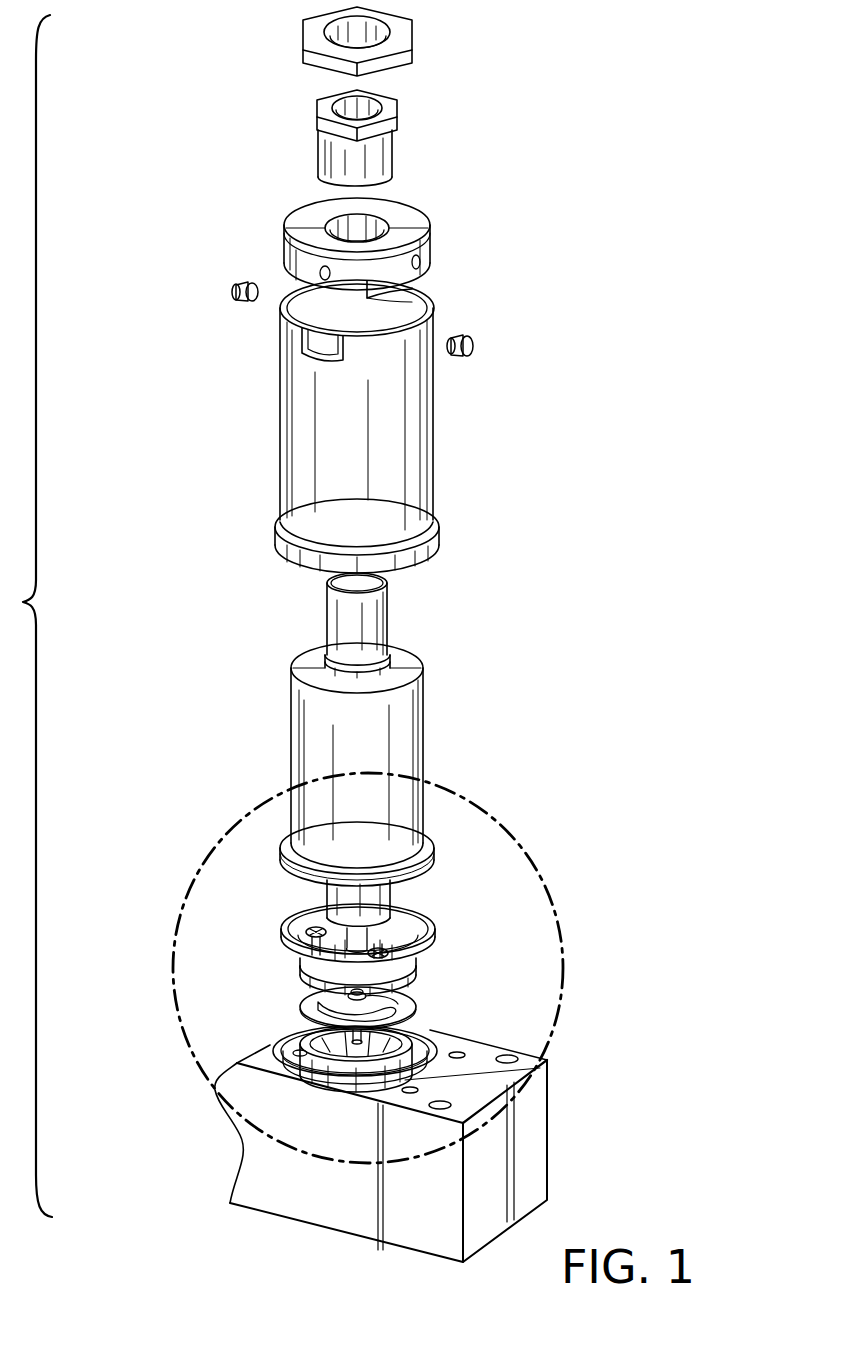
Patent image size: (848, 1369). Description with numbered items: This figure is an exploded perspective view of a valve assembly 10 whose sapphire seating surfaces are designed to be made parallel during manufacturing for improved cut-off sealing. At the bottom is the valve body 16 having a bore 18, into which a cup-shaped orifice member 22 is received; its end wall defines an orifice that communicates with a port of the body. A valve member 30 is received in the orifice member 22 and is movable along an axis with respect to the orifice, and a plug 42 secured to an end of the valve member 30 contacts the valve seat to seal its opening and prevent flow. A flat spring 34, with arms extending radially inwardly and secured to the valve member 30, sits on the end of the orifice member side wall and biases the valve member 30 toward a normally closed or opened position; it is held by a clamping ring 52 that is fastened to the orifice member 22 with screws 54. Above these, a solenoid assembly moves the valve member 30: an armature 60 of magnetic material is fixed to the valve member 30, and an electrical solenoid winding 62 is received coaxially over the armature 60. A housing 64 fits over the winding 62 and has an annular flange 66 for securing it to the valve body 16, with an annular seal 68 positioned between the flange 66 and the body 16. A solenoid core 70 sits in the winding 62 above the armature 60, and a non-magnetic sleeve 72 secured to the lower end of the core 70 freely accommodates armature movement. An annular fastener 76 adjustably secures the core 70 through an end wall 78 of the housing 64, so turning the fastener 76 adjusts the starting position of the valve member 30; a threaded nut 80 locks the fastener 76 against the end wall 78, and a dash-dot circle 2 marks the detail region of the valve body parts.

The detail region 2 is at (533, 867).
The valve assembly 10 is at (653, 560).
The valve body 16 is at (300, 1183).
The bore 18 is at (423, 1050).
The orifice member 22 is at (297, 1043).
The valve member 30 is at (352, 1040).
The flat spring 34 is at (405, 1003).
The plug 42 is at (360, 1047).
The clamping ring 52 is at (302, 977).
The screws 54 is at (307, 927).
The armature 60 is at (380, 897).
The electrical solenoid winding 62 is at (413, 737).
The housing 64 is at (413, 438).
The annular flange 66 is at (427, 548).
The annular seal 68 is at (435, 937).
The solenoid core 70 is at (377, 613).
The non-magnetic sleeve 72 is at (437, 843).
The annular fastener 76 is at (387, 152).
The end wall 78 is at (412, 213).
The hex nut 80 is at (413, 43).